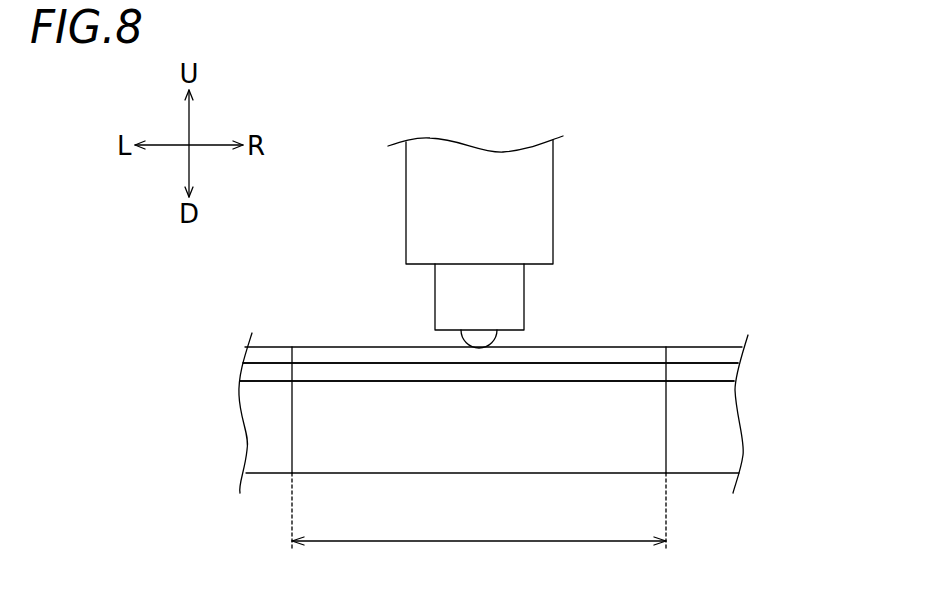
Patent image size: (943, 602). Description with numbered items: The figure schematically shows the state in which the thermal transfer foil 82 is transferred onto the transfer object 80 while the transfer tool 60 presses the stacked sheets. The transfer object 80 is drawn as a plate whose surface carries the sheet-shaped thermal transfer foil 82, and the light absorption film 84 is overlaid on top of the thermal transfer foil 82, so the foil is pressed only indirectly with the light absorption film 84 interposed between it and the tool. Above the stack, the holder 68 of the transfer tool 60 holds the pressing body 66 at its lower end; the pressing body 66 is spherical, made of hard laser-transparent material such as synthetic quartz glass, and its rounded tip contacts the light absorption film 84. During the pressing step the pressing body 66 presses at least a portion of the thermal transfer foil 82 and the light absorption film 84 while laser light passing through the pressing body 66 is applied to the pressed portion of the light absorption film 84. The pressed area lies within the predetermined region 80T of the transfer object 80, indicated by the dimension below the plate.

The transfer tool 60 is at (484, 242).
The pressing body 66 is at (483, 342).
The holder 68 is at (406, 209).
The transfer object 80 is at (727, 427).
The predetermined region 80T is at (479, 510).
The thermal transfer foil 82 is at (727, 372).
The light absorption film 84 is at (706, 354).